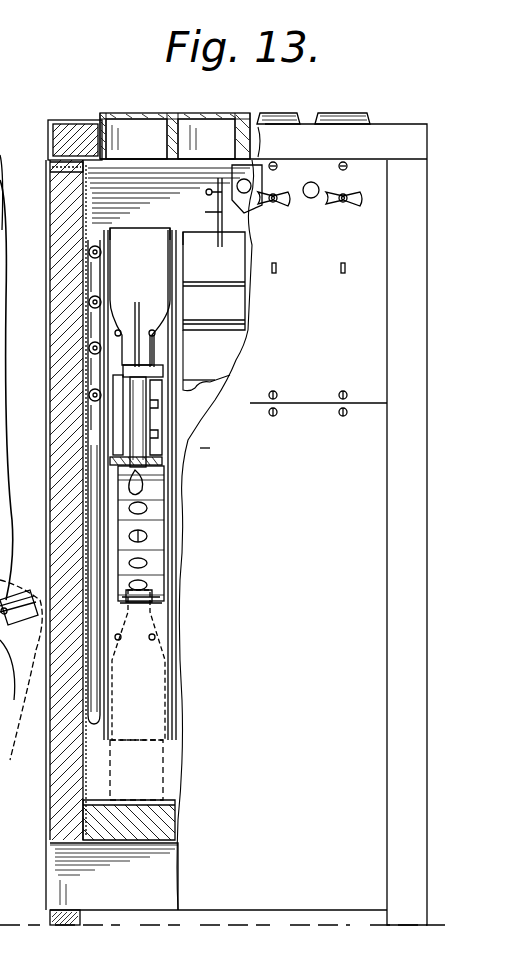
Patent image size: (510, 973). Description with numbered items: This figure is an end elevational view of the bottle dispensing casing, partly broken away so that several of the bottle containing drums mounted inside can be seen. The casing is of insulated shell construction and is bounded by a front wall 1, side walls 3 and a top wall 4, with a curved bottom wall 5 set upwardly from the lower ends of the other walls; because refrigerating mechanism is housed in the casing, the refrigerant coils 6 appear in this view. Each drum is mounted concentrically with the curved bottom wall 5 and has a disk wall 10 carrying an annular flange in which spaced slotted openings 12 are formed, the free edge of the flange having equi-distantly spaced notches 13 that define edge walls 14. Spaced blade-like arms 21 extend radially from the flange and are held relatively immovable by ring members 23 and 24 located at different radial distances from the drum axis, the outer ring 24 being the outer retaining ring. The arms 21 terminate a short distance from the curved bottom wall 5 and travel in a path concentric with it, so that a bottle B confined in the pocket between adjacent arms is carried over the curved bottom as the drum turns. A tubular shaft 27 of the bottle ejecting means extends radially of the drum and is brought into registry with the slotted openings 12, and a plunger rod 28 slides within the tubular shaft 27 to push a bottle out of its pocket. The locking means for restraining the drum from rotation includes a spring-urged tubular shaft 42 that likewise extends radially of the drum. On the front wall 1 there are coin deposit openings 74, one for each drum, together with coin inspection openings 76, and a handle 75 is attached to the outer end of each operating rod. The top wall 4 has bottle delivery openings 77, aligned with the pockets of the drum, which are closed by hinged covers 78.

The front wall 1 is at (413, 270).
The side walls 3 is at (56, 228).
The top wall 4 is at (48, 130).
The curved bottom wall 5 is at (148, 828).
The refrigerant coils 6 is at (92, 715).
The disk wall 10 is at (125, 386).
The slotted openings 12 is at (140, 565).
The notches 13 is at (162, 432).
The edge walls 14 is at (152, 534).
The blade-like arms 21 is at (177, 484).
The ring member 23 is at (118, 338).
The outer retaining ring 24 is at (112, 247).
The tubular shaft 27 is at (143, 452).
The plunger rod 28 is at (146, 294).
The tubular shaft 42 is at (21, 670).
The coin deposit openings 74 is at (316, 178).
The handle 75 is at (336, 206).
The coin inspection openings 76 is at (340, 270).
The bottle delivery openings 77 is at (192, 130).
The hinged covers 78 is at (275, 120).
The bottle B is at (160, 782).